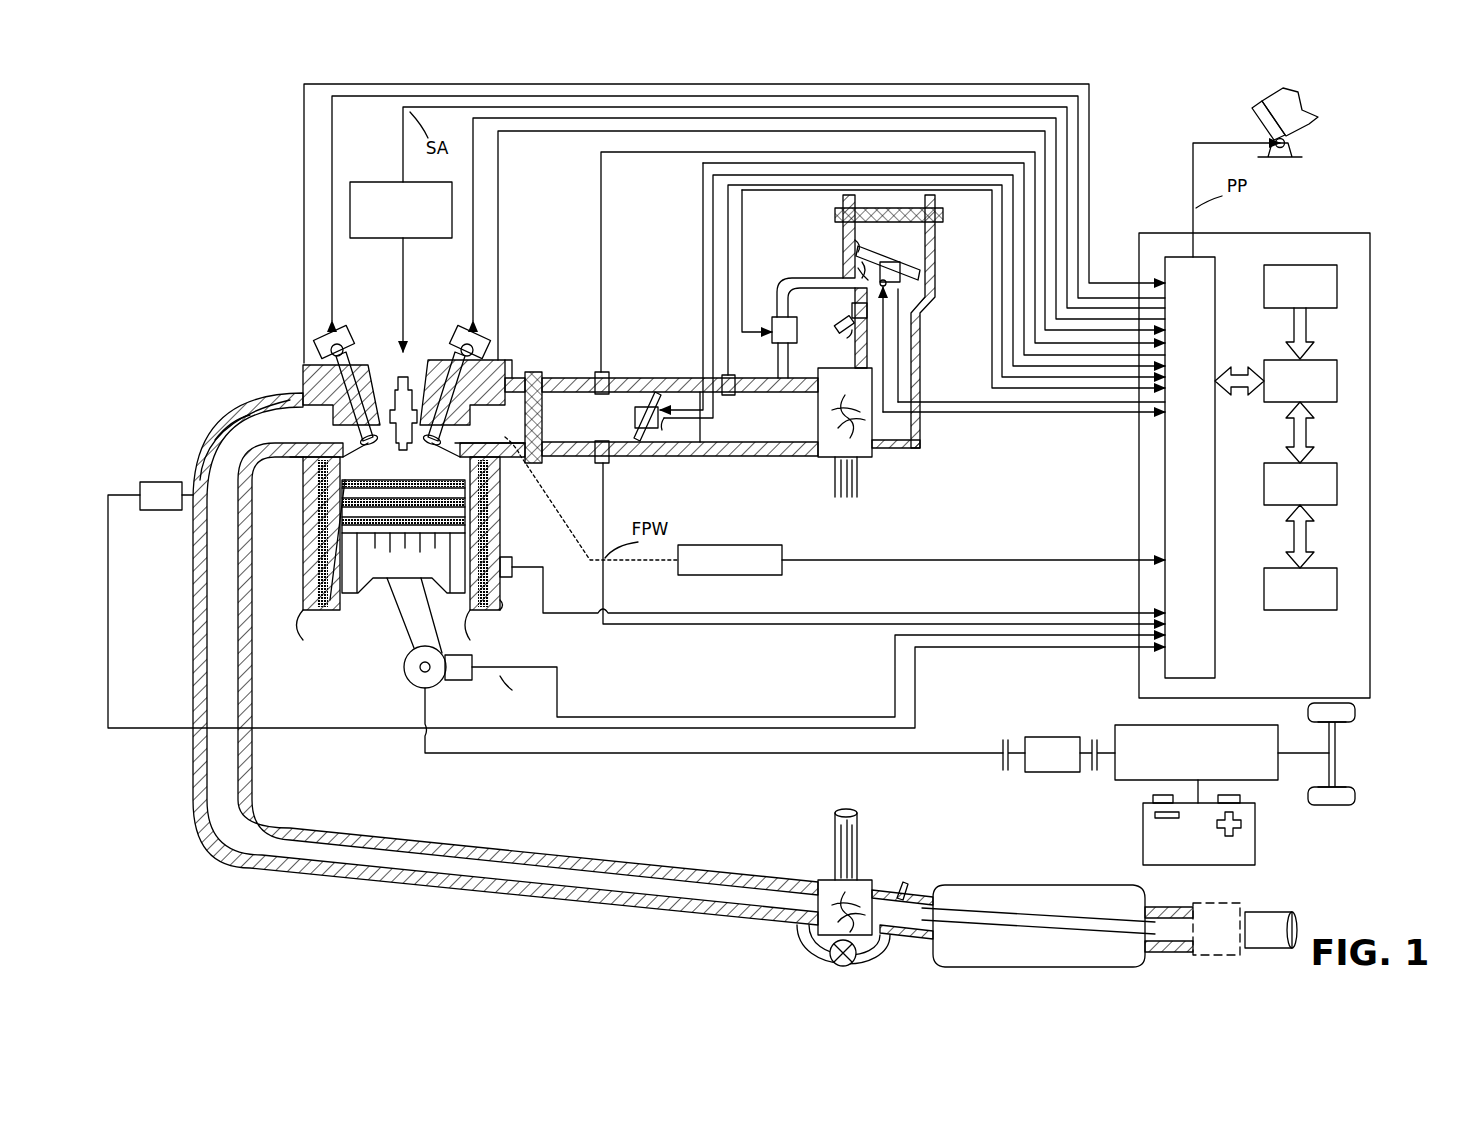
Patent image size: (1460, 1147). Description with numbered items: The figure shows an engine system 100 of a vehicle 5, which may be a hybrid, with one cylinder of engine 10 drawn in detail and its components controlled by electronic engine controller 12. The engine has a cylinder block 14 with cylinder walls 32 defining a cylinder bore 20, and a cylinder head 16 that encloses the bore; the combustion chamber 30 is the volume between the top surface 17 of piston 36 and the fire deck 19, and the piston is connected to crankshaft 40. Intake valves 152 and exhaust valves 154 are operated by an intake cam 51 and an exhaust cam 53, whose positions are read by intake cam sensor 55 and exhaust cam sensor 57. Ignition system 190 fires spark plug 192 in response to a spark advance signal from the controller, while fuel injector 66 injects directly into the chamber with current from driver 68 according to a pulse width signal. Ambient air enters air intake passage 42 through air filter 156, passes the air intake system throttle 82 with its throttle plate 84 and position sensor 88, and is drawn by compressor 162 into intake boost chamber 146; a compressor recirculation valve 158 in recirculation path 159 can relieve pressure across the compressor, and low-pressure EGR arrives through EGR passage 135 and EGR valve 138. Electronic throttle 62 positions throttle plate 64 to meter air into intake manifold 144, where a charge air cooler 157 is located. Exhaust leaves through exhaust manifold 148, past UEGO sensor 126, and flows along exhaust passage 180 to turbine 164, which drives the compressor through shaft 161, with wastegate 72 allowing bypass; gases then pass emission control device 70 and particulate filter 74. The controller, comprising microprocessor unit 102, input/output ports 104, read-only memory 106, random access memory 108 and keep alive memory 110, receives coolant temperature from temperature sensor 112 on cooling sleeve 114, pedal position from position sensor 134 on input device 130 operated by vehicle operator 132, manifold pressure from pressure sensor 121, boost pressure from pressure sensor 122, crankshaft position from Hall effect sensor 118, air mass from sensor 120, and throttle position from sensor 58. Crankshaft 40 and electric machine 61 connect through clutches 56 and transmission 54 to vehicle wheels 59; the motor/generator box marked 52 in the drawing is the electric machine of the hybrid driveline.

The vehicle 5 is at (1384, 742).
The engine 10 is at (228, 296).
The electronic engine controller 12 is at (1370, 236).
The cylinder block 14 is at (292, 515).
The cylinder head 16 is at (518, 360).
The top surface of the piston 17 is at (330, 585).
The fire deck 19 is at (506, 372).
The cylinder bore 20 is at (292, 638).
The combustion chamber 30 is at (312, 575).
The cylinder walls 32 is at (345, 632).
The piston 36 is at (388, 567).
The crankshaft 40 is at (408, 688).
The air intake passage 42 is at (1010, 318).
The intake cam 51 is at (460, 324).
The electric machine (motor/generator) 52 is at (1058, 773).
The exhaust cam 53 is at (344, 324).
The transmission 54 is at (1255, 782).
The intake cam sensor 55 is at (485, 354).
The clutches 56 is at (1003, 745).
The exhaust cam sensor 57 is at (320, 343).
The throttle position sensor 58 is at (662, 432).
The vehicle wheels 59 is at (1337, 806).
The electric machine 61 is at (1192, 867).
The electronic throttle 62 is at (650, 392).
The throttle plate 64 is at (662, 404).
The fuel injector 66 is at (488, 462).
The driver 68 is at (770, 546).
The emission control device 70 is at (935, 945).
The wastegate 72 is at (828, 953).
The particulate filter 74 is at (1221, 929).
The air intake system throttle 82 is at (858, 262).
The throttle plate 84 is at (852, 242).
The position sensor 88 is at (855, 272).
The engine system 100 is at (152, 146).
The microprocessor unit 102 is at (1337, 383).
The input/output ports 104 is at (1215, 266).
The read-only memory 106 is at (1337, 288).
The random access memory 108 is at (1337, 485).
The keep alive memory 110 is at (1337, 588).
The temperature sensor 112 is at (508, 558).
The cooling sleeve 114 is at (500, 606).
The Hall effect sensor 118 is at (460, 683).
The air mass sensor 120 is at (607, 463).
The pressure sensor 121 is at (607, 370).
The pressure sensor 122 is at (732, 378).
The UEGO sensor 126 is at (140, 488).
The input device 130 is at (1256, 120).
The vehicle operator 132 is at (1313, 113).
The position sensor 134 is at (1292, 145).
The EGR passage 135 is at (848, 338).
The EGR valve 138 is at (852, 311).
The intake manifold 144 is at (680, 417).
The intake boost chamber 146 is at (727, 417).
The exhaust manifold 148 is at (253, 427).
The intake valves 152 is at (455, 440).
The exhaust valves 154 is at (300, 396).
The air filter 156 is at (943, 215).
The charge air cooler 157 is at (543, 462).
The compressor recirculation valve 158 is at (776, 316).
The compressor recirculation path 159 is at (847, 327).
The shaft 161 is at (860, 490).
The compressor 162 is at (872, 456).
The turbine 164 is at (822, 878).
The exhaust passage 180 is at (452, 906).
The ignition system 190 is at (384, 183).
The spark plug 192 is at (405, 346).